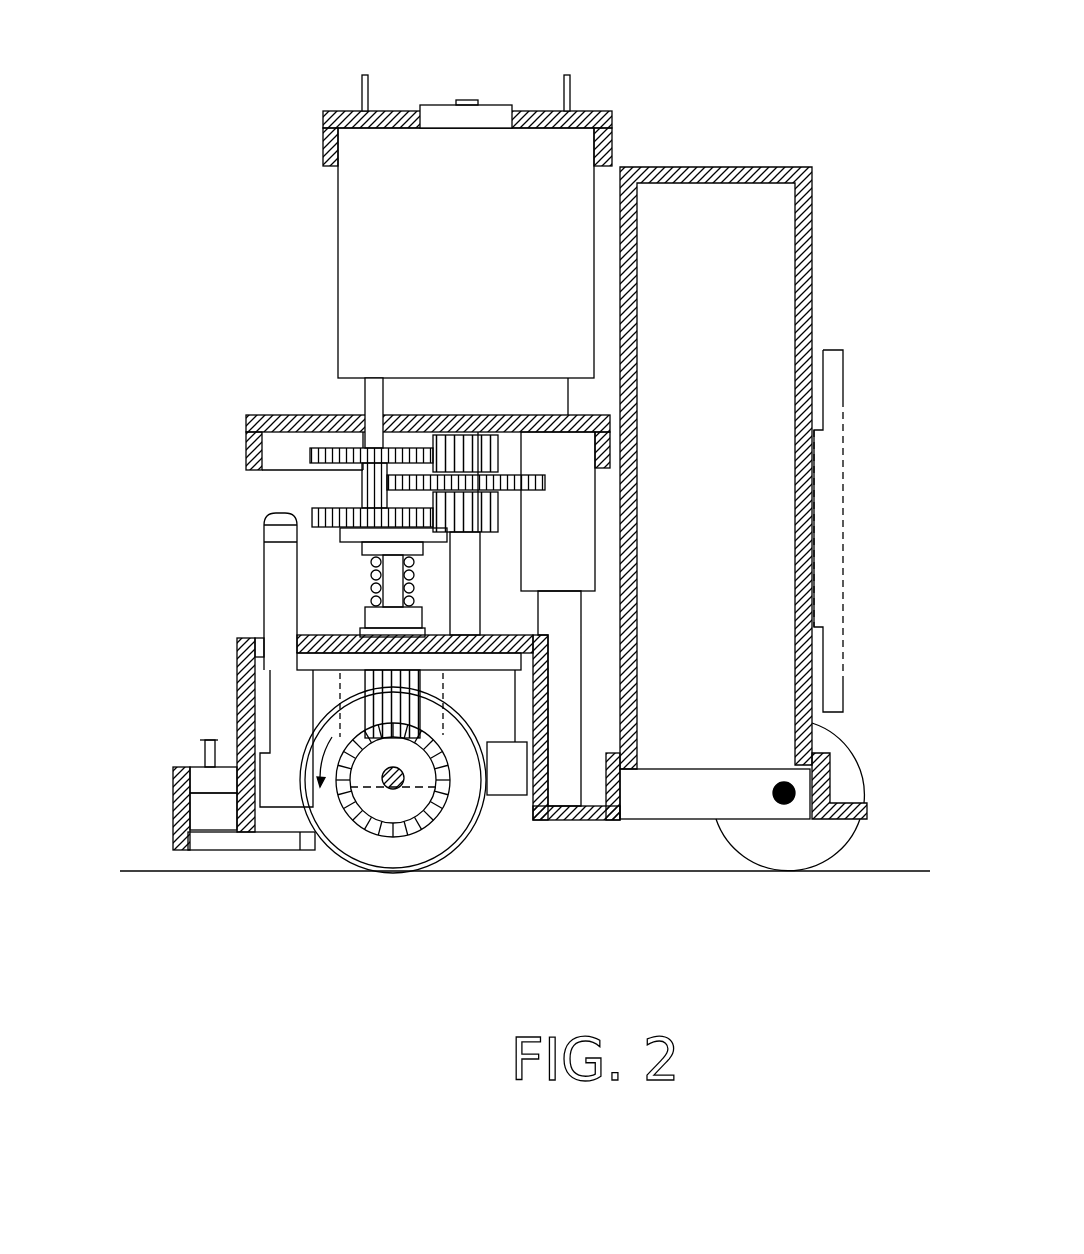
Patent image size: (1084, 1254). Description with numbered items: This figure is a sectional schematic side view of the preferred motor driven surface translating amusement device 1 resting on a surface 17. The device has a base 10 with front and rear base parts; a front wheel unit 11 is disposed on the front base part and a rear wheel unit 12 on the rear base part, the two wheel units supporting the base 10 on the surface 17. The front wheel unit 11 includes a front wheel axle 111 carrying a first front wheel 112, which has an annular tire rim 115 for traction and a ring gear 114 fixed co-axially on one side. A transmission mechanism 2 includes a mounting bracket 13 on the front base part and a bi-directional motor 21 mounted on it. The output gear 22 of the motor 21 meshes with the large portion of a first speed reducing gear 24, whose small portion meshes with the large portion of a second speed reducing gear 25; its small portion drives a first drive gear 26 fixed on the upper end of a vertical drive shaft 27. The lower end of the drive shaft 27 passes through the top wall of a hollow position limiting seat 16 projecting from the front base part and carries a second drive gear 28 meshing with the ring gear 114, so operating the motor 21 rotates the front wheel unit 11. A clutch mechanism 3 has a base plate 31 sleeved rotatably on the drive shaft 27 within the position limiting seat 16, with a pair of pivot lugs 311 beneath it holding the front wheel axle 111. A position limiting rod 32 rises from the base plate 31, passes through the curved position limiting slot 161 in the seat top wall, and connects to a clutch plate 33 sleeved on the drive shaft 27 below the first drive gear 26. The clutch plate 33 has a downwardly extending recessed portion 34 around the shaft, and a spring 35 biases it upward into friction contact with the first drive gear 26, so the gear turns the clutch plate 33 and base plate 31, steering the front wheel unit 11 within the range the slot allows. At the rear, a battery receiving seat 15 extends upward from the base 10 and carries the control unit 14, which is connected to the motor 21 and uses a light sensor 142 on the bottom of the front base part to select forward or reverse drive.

The motor driven surface translating amusement device 1 is at (618, 107).
The transmission mechanism 2 is at (355, 409).
The clutch mechanism 3 is at (263, 622).
The base 10 is at (572, 806).
The front wheel unit 11 is at (328, 858).
The rear wheel unit 12 is at (808, 840).
The mounting bracket 13 is at (500, 470).
The control unit 14 is at (842, 410).
The battery receiving seat 15 is at (813, 220).
The position limiting seat 16 is at (243, 730).
The surface 17 is at (888, 871).
The bi-directional motor 21 is at (528, 180).
The output gear 22 is at (470, 455).
The first speed reducing gear 24 is at (338, 512).
The second speed reducing gear 25 is at (412, 480).
The first drive gear 26 is at (310, 538).
The vertical drive shaft 27 is at (342, 542).
The second drive gear 28 is at (383, 725).
The base plate 31 is at (273, 578).
The position limiting rod 32 is at (352, 683).
The clutch plate 33 is at (358, 667).
The recessed portion 34 is at (422, 552).
The spring 35 is at (368, 585).
The front wheel axle 111 is at (397, 785).
The first front wheel 112 is at (337, 822).
The ring gear 114 is at (427, 820).
The annular tire rim 115 is at (373, 872).
The light sensor 142 is at (215, 827).
The position limiting slot 161 is at (237, 640).
The pivot lugs 311 is at (353, 663).